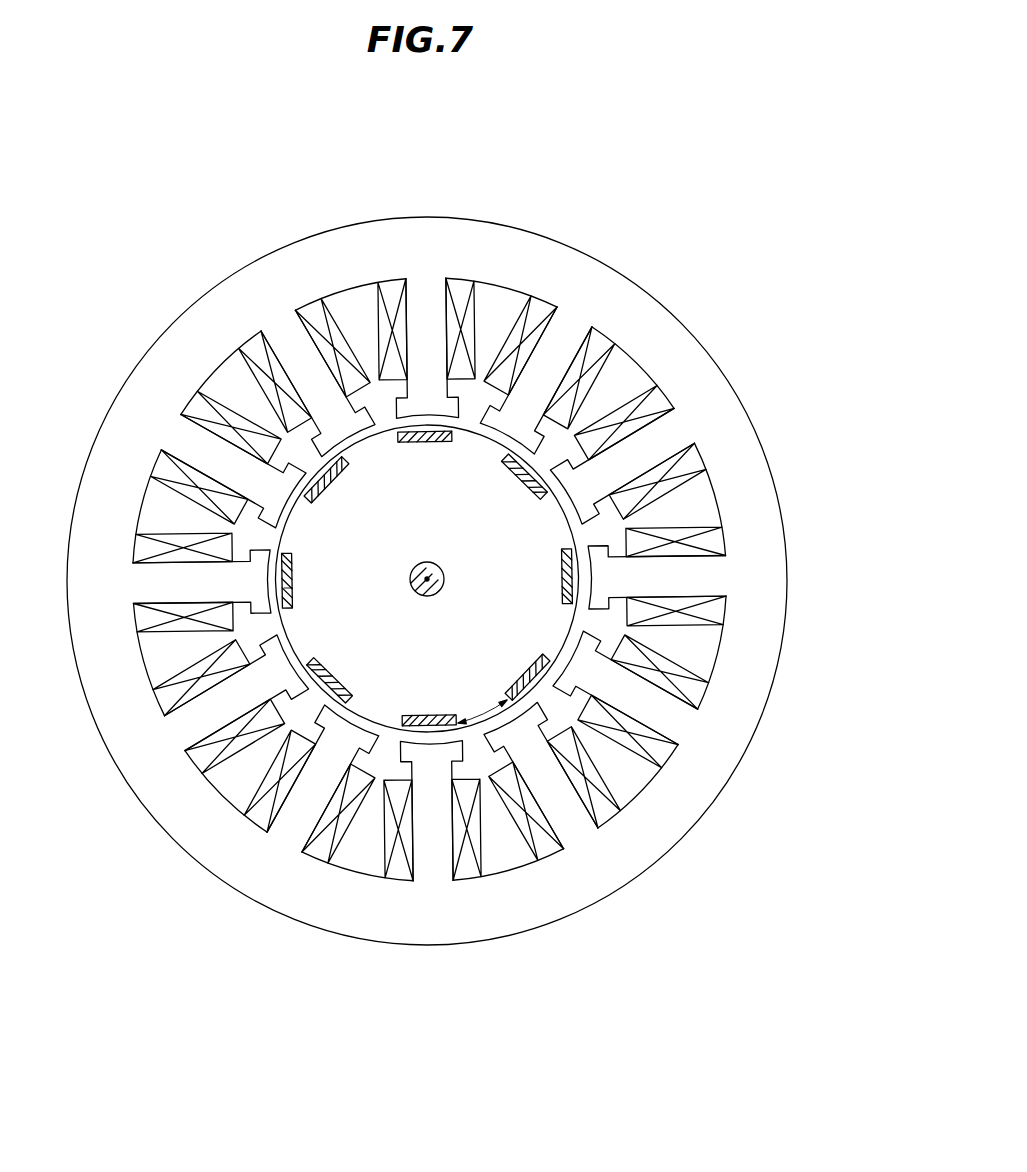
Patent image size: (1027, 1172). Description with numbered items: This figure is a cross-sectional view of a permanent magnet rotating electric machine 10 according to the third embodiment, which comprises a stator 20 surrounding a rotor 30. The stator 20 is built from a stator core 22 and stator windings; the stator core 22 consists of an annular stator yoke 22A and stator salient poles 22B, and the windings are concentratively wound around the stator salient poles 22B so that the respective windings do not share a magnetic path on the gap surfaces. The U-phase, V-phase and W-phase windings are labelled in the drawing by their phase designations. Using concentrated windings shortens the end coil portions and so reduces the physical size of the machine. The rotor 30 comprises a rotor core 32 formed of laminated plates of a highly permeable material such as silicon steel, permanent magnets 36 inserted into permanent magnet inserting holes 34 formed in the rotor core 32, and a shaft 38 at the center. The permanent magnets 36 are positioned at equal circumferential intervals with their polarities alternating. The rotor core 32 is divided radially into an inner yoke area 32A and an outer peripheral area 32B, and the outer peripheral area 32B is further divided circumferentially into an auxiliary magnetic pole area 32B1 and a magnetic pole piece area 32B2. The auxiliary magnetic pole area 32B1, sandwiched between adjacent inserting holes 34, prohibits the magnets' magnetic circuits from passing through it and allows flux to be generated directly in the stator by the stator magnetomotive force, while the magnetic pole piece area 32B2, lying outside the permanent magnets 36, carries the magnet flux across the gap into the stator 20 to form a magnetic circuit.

The rotating electric machine 10 is at (724, 275).
The stator 20 is at (167, 197).
The stator core 22 is at (274, 300).
The annular stator yoke 22A is at (250, 283).
The stator salient poles 22B is at (282, 331).
The rotor 30 is at (381, 626).
The rotor core 32 is at (313, 627).
The inner yoke area 32A is at (554, 632).
The outer peripheral area 32B is at (566, 637).
The auxiliary magnetic pole area 32B1 is at (477, 722).
The magnetic pole piece area 32B2 is at (540, 690).
The permanent magnet inserting holes 34 is at (284, 553).
The permanent magnets 36 is at (290, 588).
The shaft 38 is at (432, 597).